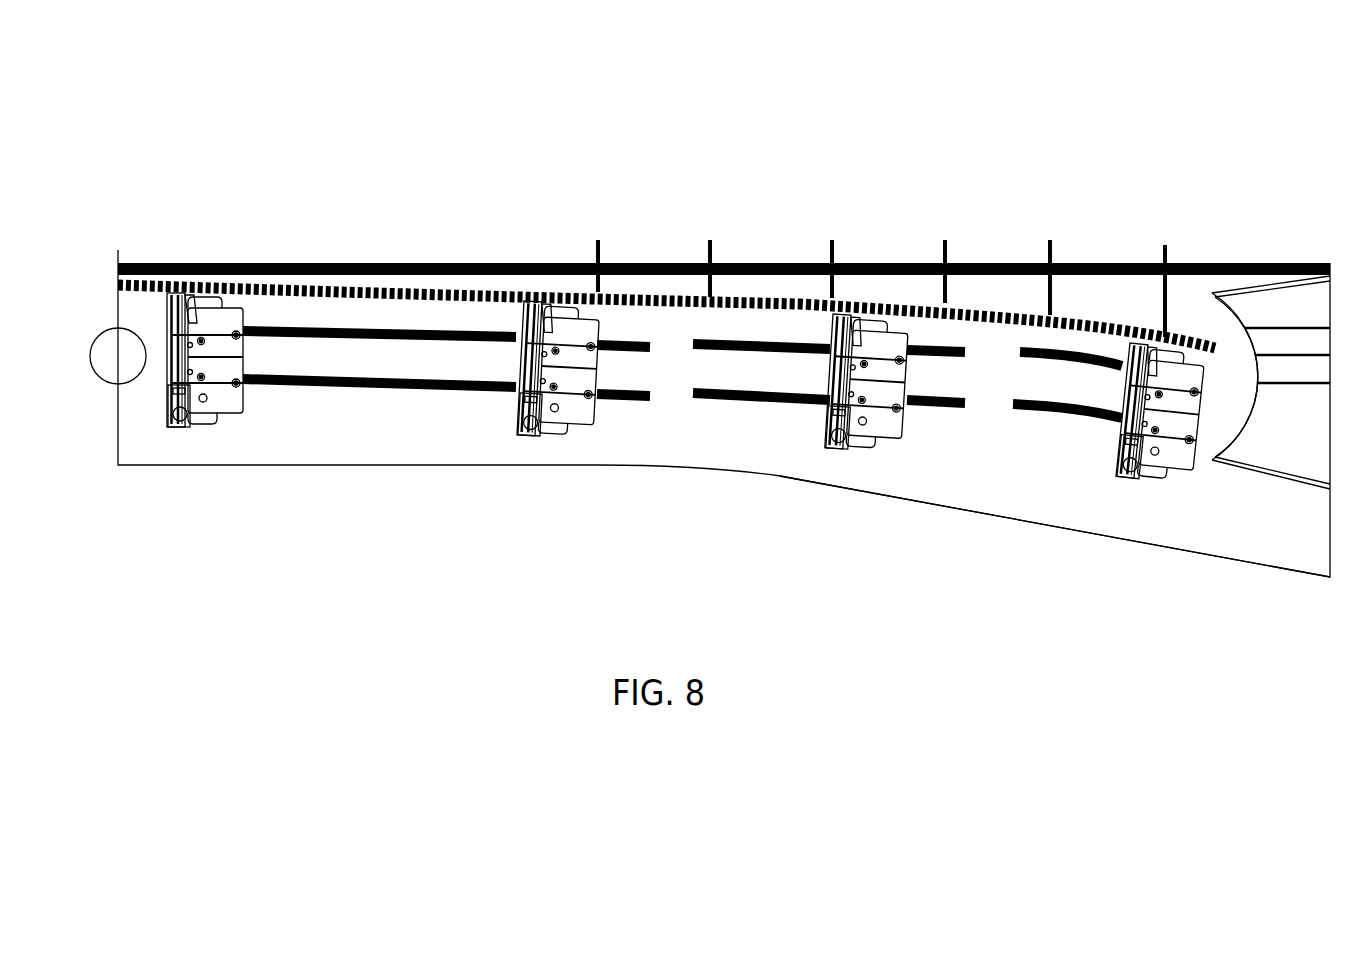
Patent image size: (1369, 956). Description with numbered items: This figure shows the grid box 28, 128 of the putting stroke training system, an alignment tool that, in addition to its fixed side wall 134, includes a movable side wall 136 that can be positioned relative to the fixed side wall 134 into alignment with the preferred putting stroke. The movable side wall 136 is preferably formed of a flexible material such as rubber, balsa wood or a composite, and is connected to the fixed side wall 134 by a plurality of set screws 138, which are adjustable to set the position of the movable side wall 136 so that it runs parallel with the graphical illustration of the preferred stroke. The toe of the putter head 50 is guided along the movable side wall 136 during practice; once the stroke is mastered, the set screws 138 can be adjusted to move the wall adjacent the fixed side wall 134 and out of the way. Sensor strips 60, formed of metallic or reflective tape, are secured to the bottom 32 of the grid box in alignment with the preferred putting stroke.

The grid box 28 is at (1268, 205).
The grid box 128 is at (1268, 205).
The fixed side wall 134 is at (893, 262).
The movable side wall 136 is at (1097, 323).
The set screws 138 is at (715, 237).
The sensor strips 60 is at (475, 392).
The putter head 50 is at (168, 386).
The bottom 32 is at (958, 473).